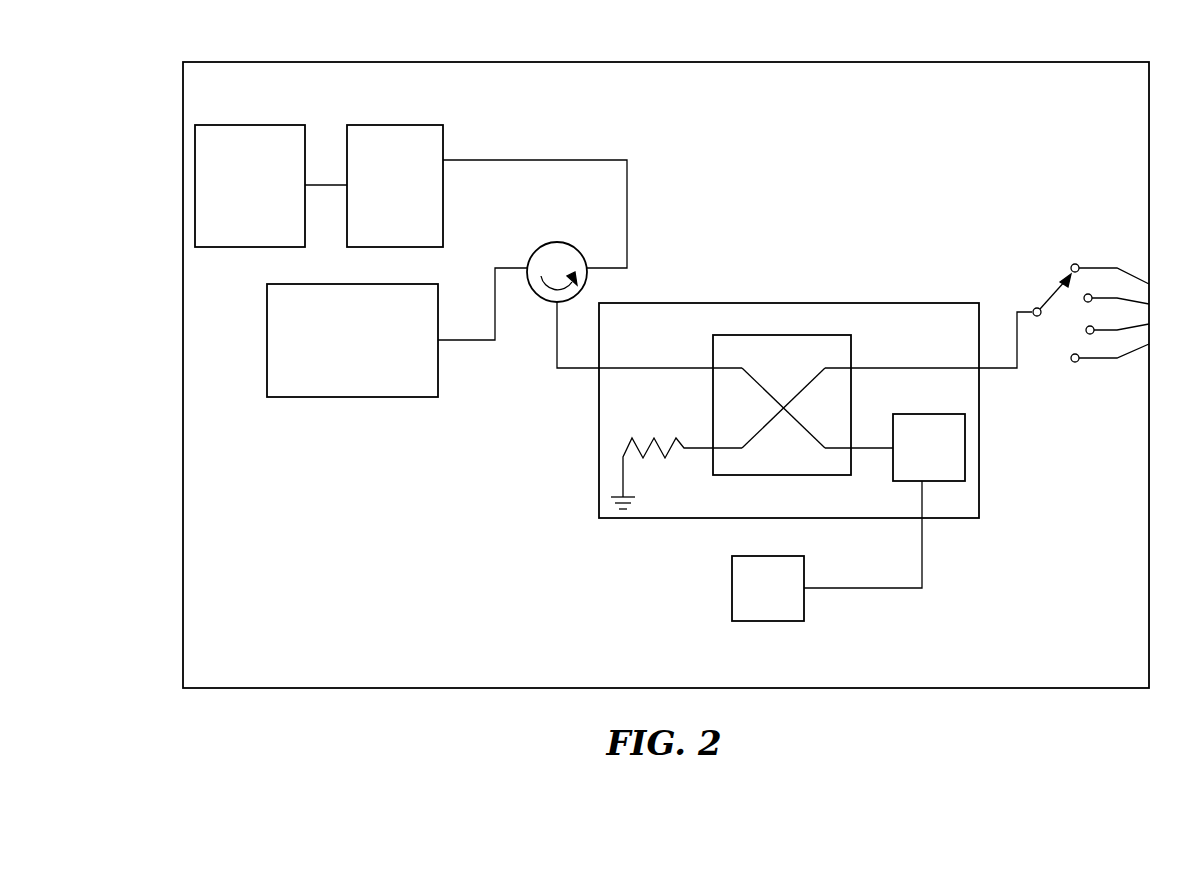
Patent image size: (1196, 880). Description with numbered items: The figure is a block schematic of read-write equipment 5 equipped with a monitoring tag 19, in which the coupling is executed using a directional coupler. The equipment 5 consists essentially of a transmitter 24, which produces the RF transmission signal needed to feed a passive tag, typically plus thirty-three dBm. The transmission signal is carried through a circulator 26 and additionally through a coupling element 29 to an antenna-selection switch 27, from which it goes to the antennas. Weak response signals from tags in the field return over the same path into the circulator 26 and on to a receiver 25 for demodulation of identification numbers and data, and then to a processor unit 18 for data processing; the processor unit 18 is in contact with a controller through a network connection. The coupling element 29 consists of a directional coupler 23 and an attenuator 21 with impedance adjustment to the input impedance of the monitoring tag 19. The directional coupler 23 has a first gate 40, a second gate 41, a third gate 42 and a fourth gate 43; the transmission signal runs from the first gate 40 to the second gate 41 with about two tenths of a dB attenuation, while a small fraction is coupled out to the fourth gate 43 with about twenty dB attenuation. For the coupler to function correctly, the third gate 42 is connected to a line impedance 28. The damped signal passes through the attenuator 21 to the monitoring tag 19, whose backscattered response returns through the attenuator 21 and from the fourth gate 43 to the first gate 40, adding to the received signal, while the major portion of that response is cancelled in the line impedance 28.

The read-write equipment 5 is at (666, 363).
The processor unit 18 is at (271, 175).
The receiver 25 is at (487, 185).
The transmitter 24 is at (397, 330).
The circulator 26 is at (556, 244).
The coupling element 29 is at (789, 399).
The directional coupler 23 is at (782, 394).
The first gate 40 is at (671, 357).
The second gate 41 is at (928, 340).
The third gate 42 is at (714, 437).
The fourth gate 43 is at (859, 437).
The line impedance 28 is at (636, 439).
The attenuator 21 is at (884, 490).
The monitoring tag 19 is at (768, 578).
The antenna-selection switch 27 is at (1048, 294).